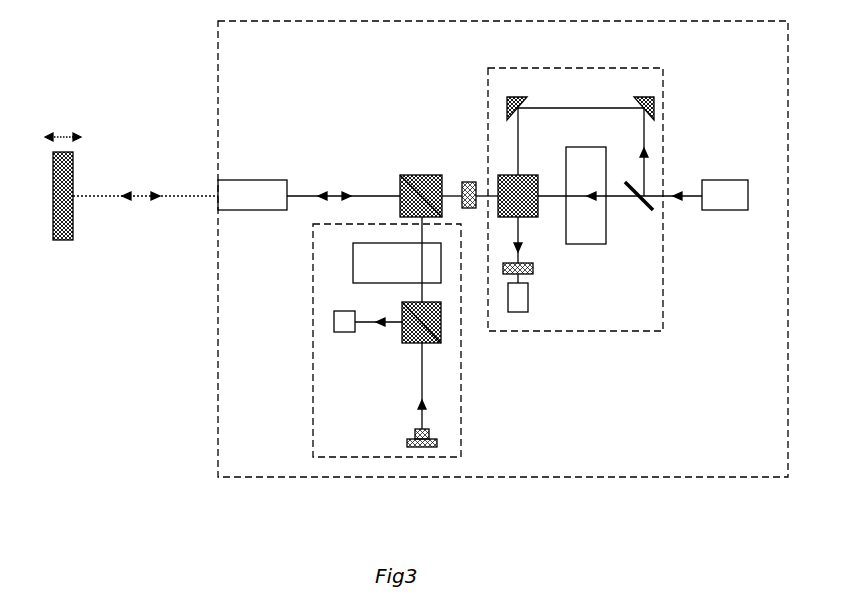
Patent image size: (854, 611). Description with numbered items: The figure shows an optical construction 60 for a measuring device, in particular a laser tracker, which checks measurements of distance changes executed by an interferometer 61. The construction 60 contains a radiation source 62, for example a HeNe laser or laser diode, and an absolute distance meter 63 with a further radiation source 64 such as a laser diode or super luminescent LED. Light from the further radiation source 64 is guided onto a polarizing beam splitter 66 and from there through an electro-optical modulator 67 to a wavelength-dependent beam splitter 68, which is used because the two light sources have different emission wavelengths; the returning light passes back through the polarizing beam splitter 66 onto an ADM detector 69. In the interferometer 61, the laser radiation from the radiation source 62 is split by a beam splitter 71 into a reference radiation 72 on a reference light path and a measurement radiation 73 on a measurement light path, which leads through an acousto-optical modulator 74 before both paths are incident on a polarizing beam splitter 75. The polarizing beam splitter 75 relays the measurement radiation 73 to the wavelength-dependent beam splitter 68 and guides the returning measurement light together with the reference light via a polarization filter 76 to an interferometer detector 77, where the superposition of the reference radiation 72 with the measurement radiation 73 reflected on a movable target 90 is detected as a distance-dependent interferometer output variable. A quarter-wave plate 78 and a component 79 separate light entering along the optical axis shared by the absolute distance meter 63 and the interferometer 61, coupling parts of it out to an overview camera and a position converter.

The optical construction 60 is at (268, 62).
The interferometer 61 is at (578, 183).
The radiation source 62 is at (733, 172).
The absolute distance meter 63 is at (359, 340).
The further radiation source 64 is at (460, 448).
The polarizing beam splitter 66 is at (457, 341).
The electro-optical modulator 67 is at (349, 267).
The ADM detector 69 is at (306, 331).
The wavelength-dependent beam splitter 68 is at (392, 174).
The beam splitter 71 is at (675, 237).
The reference radiation 72 is at (577, 116).
The measurement radiation 73 is at (390, 222).
The acousto-optical modulator 74 is at (637, 254).
The polarizing beam splitter 75 is at (485, 154).
The polarization filter 76 is at (552, 316).
The interferometer detector 77 is at (555, 341).
The quarter-wave plate 78 is at (442, 169).
The component 79 is at (255, 177).
The movable target 90 is at (80, 204).